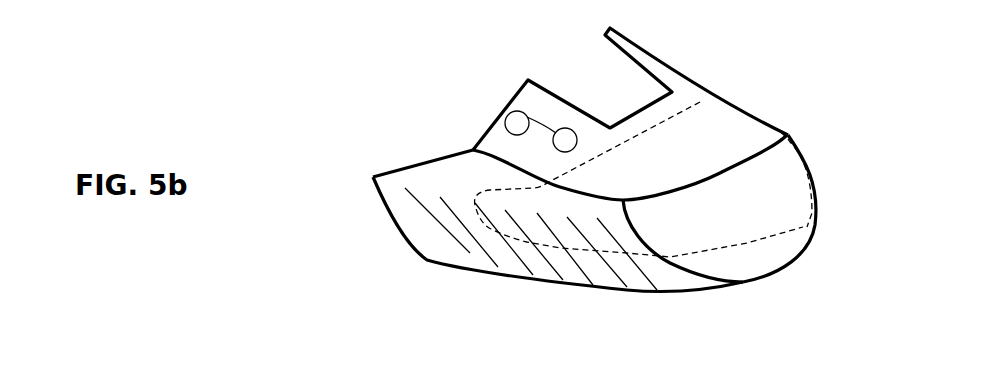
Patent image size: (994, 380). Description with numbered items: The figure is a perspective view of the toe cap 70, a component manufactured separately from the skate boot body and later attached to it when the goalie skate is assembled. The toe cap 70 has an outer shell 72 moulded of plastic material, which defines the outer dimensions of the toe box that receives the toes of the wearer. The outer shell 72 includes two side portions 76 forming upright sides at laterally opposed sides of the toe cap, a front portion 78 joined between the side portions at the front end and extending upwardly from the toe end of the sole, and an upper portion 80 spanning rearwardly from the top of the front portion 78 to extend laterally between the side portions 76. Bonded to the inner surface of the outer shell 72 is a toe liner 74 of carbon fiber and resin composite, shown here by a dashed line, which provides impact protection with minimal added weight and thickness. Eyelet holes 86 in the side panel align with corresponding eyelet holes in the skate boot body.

The toe cap 70 is at (335, 95).
The outer shell 72 is at (472, 256).
The toe liner 74 is at (748, 244).
The side portions 76 is at (558, 261).
The front portion 78 is at (780, 200).
The upper portion 80 is at (715, 127).
The eyelet holes 86 is at (508, 111).